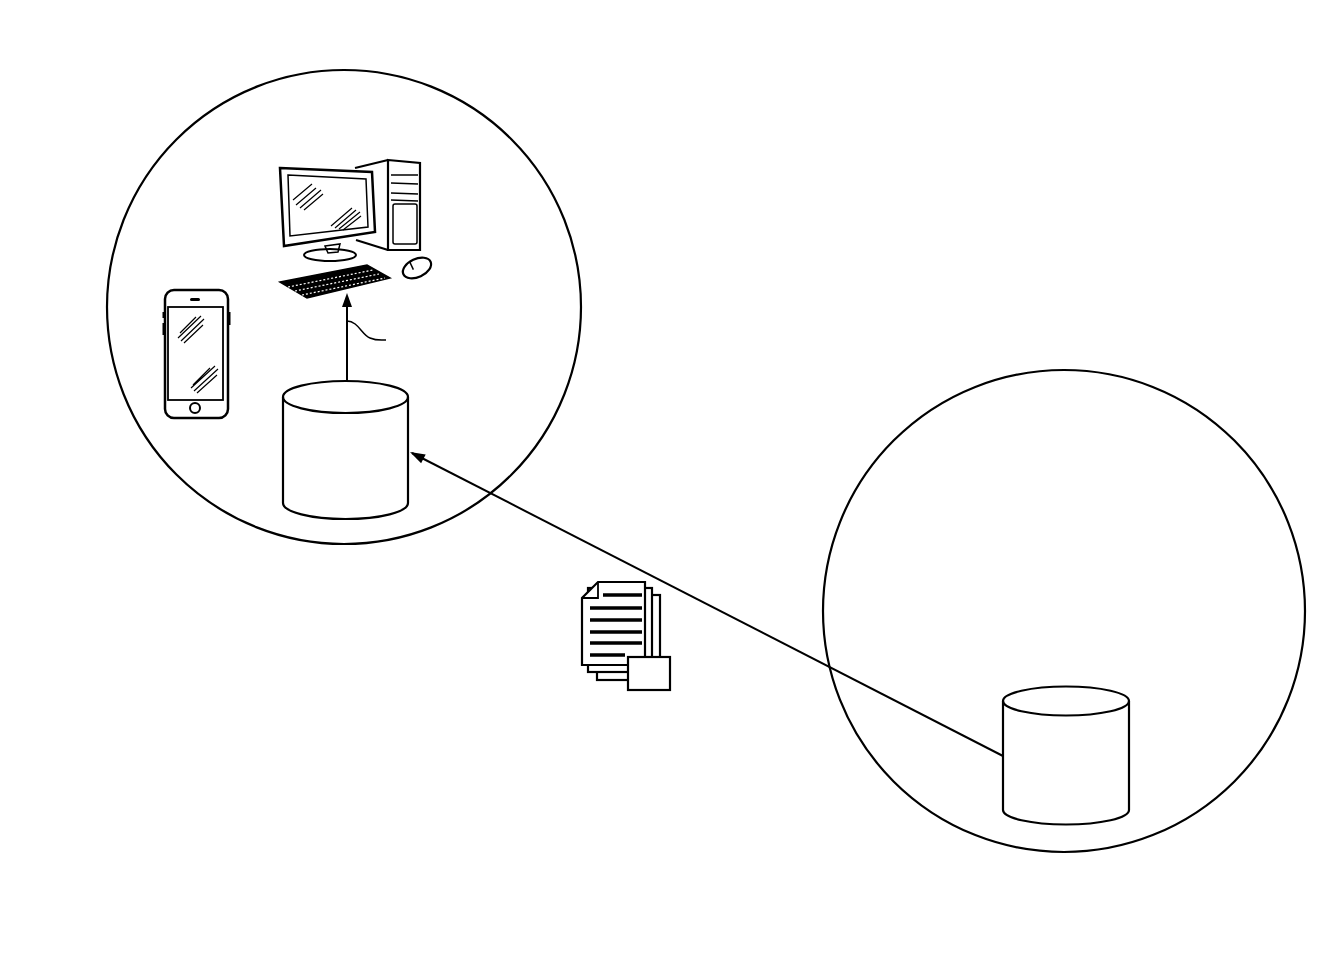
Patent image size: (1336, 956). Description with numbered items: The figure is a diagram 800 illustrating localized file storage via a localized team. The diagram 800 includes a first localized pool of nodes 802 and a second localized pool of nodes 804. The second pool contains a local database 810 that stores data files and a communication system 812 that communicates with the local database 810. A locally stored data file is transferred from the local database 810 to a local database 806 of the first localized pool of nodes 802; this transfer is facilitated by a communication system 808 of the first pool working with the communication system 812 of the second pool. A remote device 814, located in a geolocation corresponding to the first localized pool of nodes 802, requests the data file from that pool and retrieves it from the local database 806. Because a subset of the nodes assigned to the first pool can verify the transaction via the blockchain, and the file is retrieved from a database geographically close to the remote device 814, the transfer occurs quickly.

The diagram 800 is at (194, 51).
The first localized pool of nodes 802 is at (217, 108).
The second localized pool of nodes 804 is at (926, 413).
The local database 806 is at (283, 452).
The communication system 808 is at (282, 205).
The local database 810 is at (1068, 686).
The communication system 812 is at (996, 563).
The remote device 814 is at (197, 290).